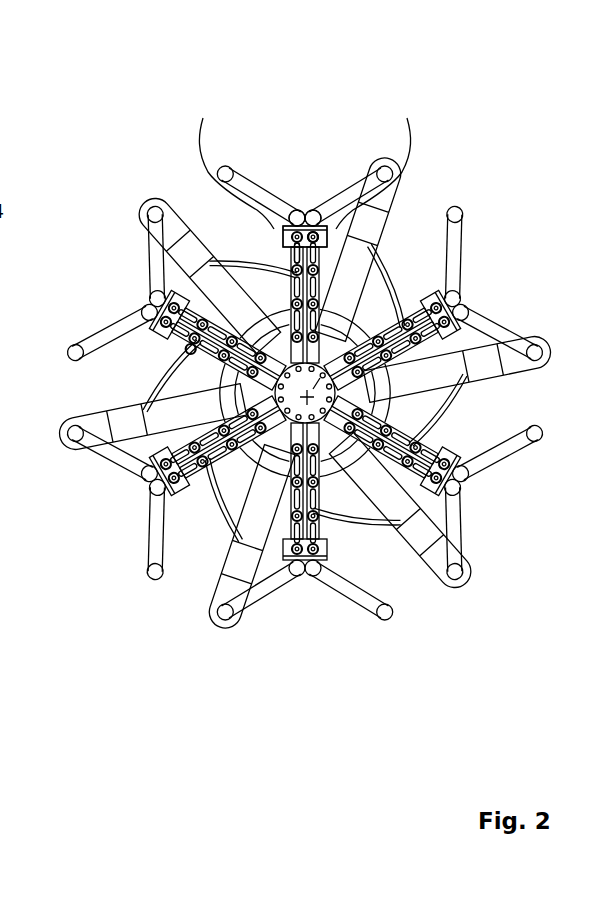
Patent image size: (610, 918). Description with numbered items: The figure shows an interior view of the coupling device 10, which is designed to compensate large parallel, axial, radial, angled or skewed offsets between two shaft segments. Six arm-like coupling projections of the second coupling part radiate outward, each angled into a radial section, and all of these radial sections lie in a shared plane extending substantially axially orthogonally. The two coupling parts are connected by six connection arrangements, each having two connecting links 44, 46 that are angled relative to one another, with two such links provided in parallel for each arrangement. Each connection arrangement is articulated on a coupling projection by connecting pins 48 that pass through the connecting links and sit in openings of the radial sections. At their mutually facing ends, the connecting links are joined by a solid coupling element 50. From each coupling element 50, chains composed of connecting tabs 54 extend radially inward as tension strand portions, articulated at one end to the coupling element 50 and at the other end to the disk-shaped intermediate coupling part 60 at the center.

The coupling device 10 is at (498, 210).
The connecting link 44 is at (262, 185).
The connecting link 46 is at (352, 190).
The connecting pin 48 is at (258, 190).
The coupling element 50 is at (203, 118).
The chain composed of connecting tabs 54 is at (178, 345).
The intermediate coupling part 60 is at (395, 205).